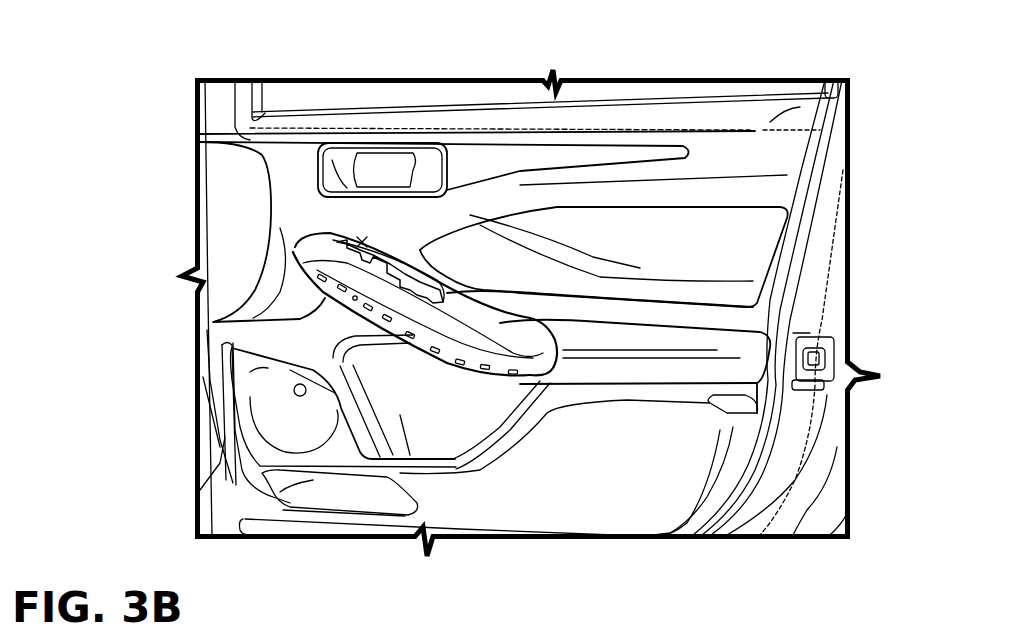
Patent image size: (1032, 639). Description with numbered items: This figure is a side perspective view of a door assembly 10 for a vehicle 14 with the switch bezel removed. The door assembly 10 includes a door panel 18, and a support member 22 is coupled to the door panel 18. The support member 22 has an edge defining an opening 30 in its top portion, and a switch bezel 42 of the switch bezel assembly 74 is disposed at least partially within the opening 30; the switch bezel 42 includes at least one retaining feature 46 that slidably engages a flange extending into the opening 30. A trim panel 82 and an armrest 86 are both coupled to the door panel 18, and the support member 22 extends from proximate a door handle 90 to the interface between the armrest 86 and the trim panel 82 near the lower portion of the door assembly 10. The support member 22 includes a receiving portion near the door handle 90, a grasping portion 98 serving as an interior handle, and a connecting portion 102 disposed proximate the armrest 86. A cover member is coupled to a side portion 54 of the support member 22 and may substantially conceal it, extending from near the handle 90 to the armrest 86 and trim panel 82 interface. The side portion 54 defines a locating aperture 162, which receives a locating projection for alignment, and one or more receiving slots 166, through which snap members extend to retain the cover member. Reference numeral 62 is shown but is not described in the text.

The door assembly 10 is at (812, 248).
The vehicle 14 is at (591, 72).
The door panel 18 is at (792, 158).
The support member 22 is at (470, 290).
The opening 30 is at (362, 242).
The switch bezel 42 is at (278, 223).
The retaining feature 46 is at (381, 276).
The side portion 54 is at (456, 395).
The lower left trim 62 is at (213, 507).
The switch bezel assembly 74 is at (320, 298).
The trim panel 82 is at (630, 502).
The armrest 86 is at (720, 347).
The door handle 90 is at (393, 150).
The grasping portion 98 is at (485, 350).
The connecting portion 102 is at (540, 345).
The locating aperture 162 is at (400, 322).
The receiving slot 166 is at (468, 337).